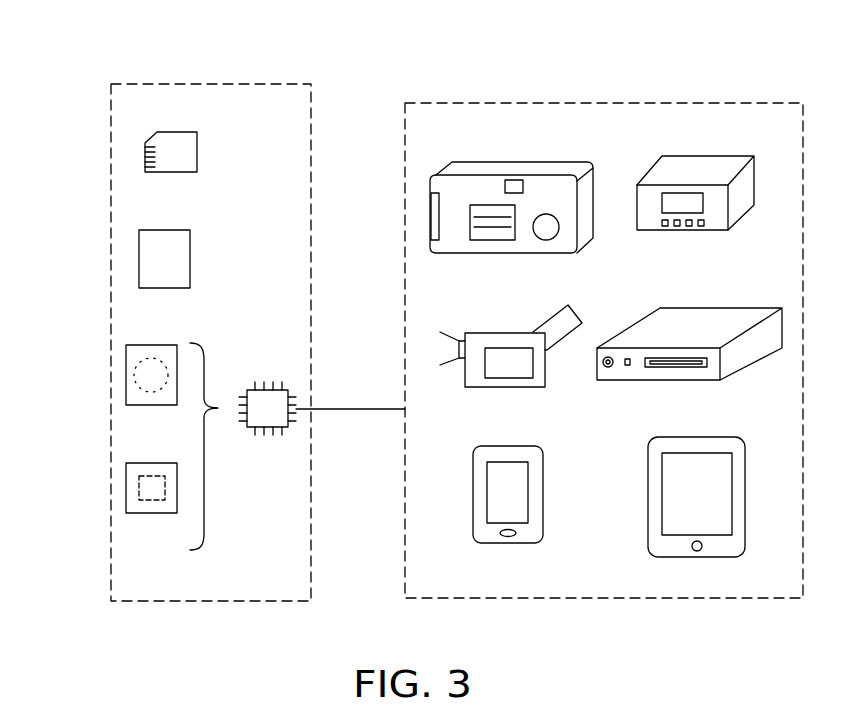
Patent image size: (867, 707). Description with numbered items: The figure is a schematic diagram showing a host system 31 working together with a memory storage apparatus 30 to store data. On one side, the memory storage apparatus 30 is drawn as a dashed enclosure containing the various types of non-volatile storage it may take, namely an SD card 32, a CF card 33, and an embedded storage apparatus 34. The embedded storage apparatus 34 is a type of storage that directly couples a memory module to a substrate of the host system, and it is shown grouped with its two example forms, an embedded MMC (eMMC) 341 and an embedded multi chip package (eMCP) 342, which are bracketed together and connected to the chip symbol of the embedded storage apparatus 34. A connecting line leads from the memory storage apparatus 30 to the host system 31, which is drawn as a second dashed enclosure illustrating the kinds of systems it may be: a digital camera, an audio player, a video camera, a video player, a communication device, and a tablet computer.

The memory storage apparatus 30 is at (205, 82).
The host system 31 is at (541, 100).
The SD card 32 is at (145, 157).
The CF card 33 is at (139, 260).
The embedded storage apparatus 34 is at (268, 388).
The embedded MMC (eMMC) 341 is at (126, 377).
The embedded multi chip package (eMCP) 342 is at (126, 492).